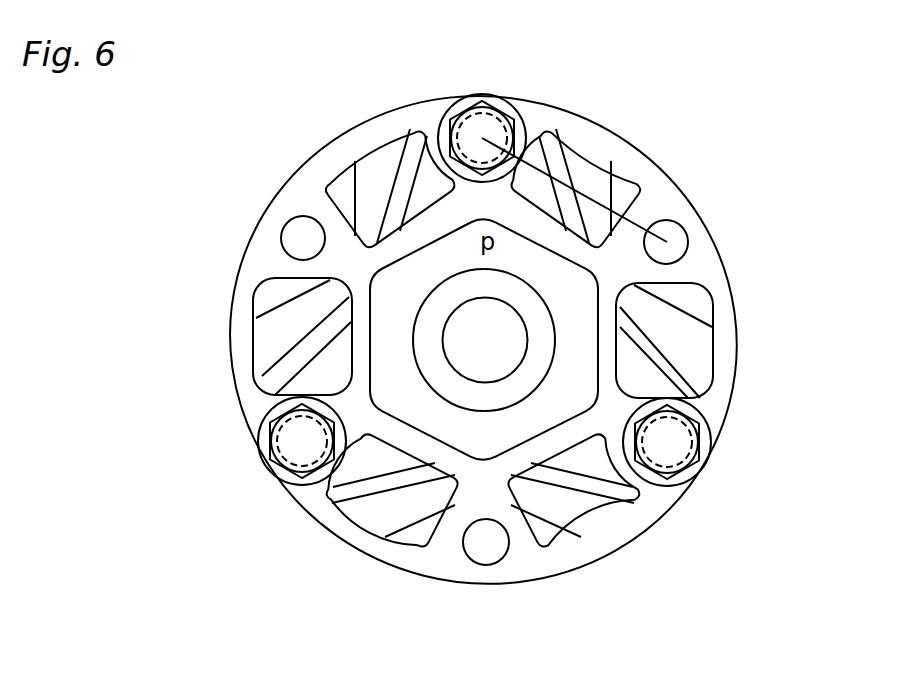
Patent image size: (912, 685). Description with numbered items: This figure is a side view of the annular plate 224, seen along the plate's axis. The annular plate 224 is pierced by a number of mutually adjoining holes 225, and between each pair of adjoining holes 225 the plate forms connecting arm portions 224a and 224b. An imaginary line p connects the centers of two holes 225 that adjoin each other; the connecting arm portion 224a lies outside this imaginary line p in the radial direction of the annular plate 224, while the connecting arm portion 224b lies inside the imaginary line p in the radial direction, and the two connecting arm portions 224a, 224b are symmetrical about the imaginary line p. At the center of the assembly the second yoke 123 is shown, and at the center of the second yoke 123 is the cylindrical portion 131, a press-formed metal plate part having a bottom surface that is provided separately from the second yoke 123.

The annular plate 224 is at (727, 262).
The connecting arm portion 224a is at (607, 135).
The connecting arm portion 224b is at (553, 237).
The holes 225 is at (662, 242).
The second yoke 123 is at (643, 370).
The cylindrical portion 131 is at (444, 330).